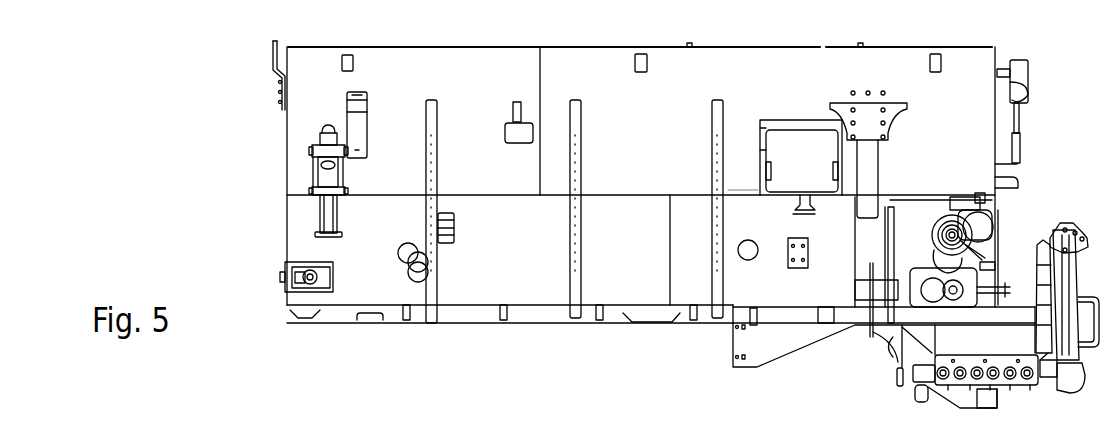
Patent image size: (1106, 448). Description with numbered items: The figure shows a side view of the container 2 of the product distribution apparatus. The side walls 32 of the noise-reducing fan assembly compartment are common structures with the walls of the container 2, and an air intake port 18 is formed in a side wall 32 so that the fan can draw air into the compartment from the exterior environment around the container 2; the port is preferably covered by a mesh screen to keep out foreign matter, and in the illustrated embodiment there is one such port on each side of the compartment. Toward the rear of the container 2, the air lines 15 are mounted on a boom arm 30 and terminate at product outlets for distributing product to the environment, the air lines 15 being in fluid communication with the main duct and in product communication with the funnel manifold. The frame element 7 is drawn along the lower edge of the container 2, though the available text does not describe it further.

The container 2 is at (287, 133).
The frame 7 is at (463, 318).
The air lines 15 is at (1030, 378).
The air intake port 18 is at (805, 150).
The boom arm 30 is at (1002, 382).
The side walls 32 is at (746, 150).